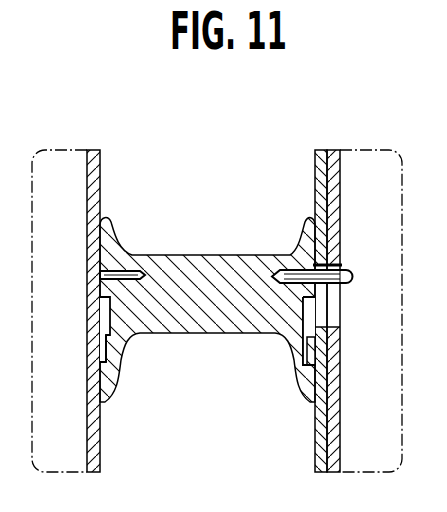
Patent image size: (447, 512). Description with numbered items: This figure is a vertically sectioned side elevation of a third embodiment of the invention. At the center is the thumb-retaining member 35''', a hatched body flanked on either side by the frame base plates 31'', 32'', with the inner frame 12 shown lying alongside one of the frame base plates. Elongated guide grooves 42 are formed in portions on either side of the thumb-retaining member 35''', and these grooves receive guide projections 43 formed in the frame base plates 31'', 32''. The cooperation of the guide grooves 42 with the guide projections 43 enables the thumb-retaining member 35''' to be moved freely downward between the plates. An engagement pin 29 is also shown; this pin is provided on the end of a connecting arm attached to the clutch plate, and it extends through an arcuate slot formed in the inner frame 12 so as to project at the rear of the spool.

The inner frame 12 is at (334, 150).
The engagement pin 29 is at (343, 269).
The frame base plate 31'' is at (313, 288).
The frame base plate 32'' is at (100, 288).
The thumb-retaining member 35''' is at (207, 306).
The elongated guide groove 42 is at (108, 305).
The guide projection 43 is at (103, 350).